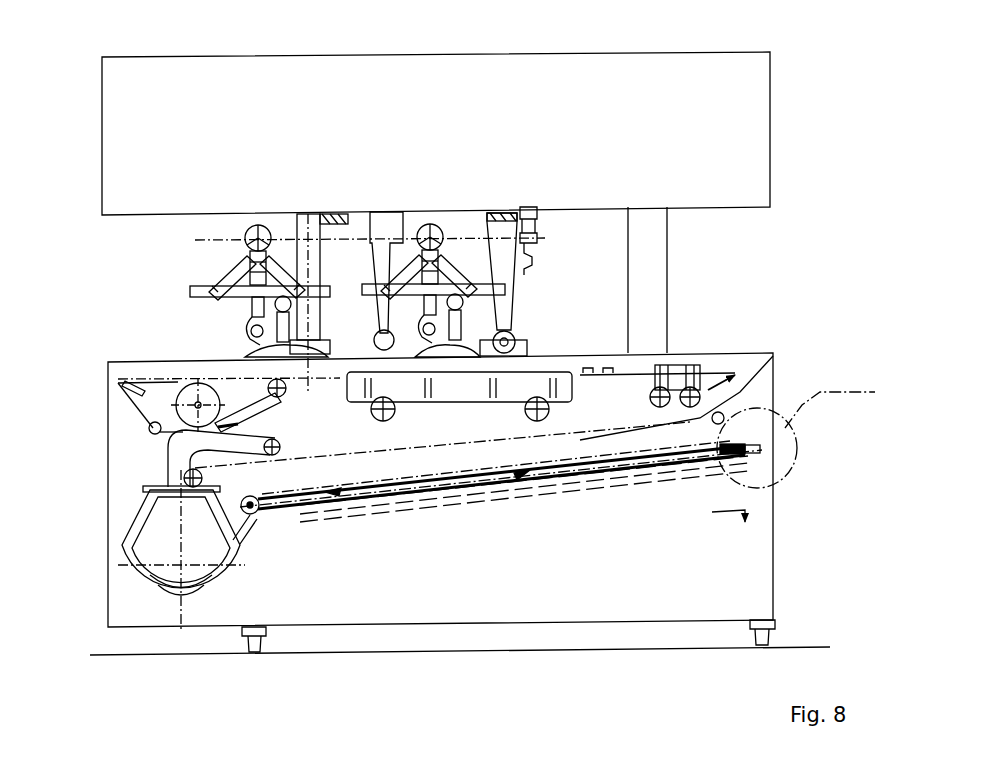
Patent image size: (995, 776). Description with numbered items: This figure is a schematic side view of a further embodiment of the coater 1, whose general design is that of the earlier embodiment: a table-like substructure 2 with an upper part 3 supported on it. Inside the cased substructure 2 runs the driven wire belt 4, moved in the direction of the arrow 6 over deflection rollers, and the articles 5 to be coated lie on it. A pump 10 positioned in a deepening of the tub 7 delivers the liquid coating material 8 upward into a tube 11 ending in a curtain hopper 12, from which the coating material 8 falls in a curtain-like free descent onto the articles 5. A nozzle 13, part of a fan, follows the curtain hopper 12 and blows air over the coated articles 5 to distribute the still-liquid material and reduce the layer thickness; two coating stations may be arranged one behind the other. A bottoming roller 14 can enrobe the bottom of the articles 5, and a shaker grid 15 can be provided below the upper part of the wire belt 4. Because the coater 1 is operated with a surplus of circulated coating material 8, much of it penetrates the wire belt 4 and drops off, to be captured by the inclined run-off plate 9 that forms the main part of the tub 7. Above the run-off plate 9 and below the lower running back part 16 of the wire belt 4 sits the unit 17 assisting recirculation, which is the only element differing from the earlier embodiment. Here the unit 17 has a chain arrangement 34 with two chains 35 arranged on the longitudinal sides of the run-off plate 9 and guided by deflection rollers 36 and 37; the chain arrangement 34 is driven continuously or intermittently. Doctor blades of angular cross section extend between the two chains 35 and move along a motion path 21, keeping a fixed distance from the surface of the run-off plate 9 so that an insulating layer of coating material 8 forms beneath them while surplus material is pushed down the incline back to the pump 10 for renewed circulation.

The coater 1 is at (795, 198).
The substructure 2 is at (778, 583).
The upper part 3 is at (772, 125).
The wire belt 4 is at (722, 337).
The articles 5 is at (724, 286).
The arrow 6 is at (170, 322).
The tub 7 is at (290, 527).
The liquid coating material 8 is at (197, 585).
The run-off plate 9 is at (600, 478).
The pump 10 is at (157, 590).
The tube 11 is at (172, 460).
The curtain hopper 12 is at (400, 230).
The nozzle 13 is at (368, 232).
The bottoming roller 14 is at (191, 404).
The shaker grid 15 is at (457, 404).
The lower running back part 16 is at (725, 405).
The unit 17 is at (637, 490).
The motion path 21 is at (775, 526).
The chain arrangement 34 is at (783, 442).
The chains 35 is at (378, 482).
The deflection roller 36 is at (233, 523).
The deflection roller 37 is at (765, 450).